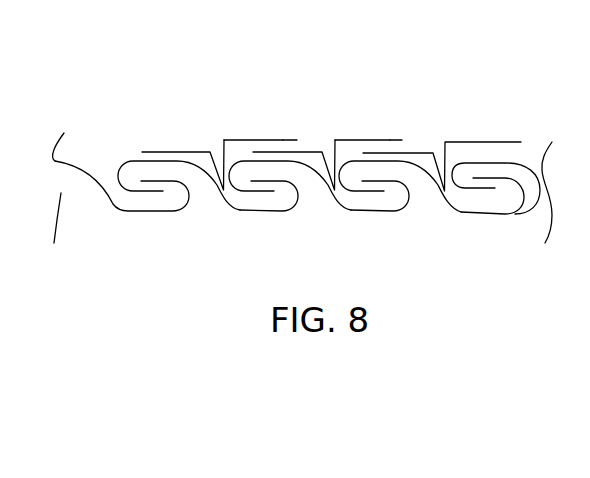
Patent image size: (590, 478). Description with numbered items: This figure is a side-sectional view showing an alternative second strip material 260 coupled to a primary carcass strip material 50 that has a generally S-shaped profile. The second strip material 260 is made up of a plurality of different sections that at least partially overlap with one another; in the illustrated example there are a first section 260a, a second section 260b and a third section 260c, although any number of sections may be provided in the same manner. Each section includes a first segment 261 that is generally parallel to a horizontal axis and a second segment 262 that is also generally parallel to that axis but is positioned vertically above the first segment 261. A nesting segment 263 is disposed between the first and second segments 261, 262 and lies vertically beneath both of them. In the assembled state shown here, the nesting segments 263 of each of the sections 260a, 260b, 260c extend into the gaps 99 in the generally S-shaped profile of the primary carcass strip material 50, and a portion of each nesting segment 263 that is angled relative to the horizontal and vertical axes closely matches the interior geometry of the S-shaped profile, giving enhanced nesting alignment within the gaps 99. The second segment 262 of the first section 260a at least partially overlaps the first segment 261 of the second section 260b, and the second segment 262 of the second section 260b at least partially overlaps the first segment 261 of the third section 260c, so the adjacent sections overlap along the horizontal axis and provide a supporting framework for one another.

The primary carcass strip material 50 is at (405, 222).
The gaps 99 is at (232, 197).
The second strip material 260 is at (170, 126).
The first section 260a is at (246, 126).
The second section 260b is at (356, 126).
The third section 260c is at (497, 126).
The first segment 261 is at (308, 143).
The second segment 262 is at (278, 138).
The nesting segment 263 is at (194, 213).